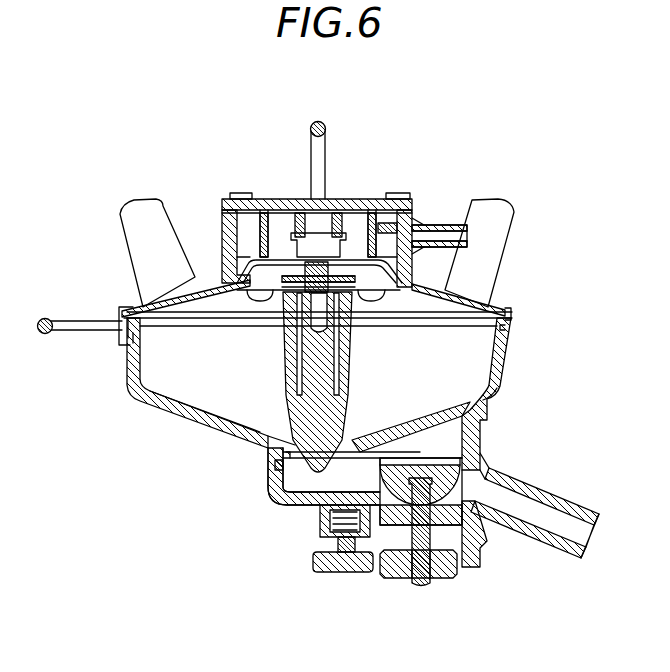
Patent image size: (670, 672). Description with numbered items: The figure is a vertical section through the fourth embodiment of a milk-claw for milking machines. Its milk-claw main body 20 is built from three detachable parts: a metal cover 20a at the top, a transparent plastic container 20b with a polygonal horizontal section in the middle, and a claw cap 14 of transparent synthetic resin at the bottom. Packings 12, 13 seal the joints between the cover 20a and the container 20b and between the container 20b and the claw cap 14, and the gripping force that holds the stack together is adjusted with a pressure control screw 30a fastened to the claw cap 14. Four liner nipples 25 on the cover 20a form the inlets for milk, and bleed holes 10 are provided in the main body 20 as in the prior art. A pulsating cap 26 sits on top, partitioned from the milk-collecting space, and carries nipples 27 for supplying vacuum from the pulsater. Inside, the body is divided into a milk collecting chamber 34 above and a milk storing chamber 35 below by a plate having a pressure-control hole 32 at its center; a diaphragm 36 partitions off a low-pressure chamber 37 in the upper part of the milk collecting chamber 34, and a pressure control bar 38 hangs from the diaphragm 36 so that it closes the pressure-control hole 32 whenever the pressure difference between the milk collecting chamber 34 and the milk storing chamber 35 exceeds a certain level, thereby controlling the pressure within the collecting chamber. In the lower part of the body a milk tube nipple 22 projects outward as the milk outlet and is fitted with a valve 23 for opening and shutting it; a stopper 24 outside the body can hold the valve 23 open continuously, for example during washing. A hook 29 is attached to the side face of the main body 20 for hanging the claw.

The bleed holes 10 is at (170, 300).
The packing 12 is at (128, 340).
The packing 13 is at (276, 466).
The claw cap 14 is at (288, 506).
The milk-claw main body 20 is at (523, 357).
The cover 20a is at (515, 308).
The container 20b is at (505, 392).
The milk tube nipple 22 is at (530, 485).
The valve 23 is at (428, 475).
The stopper 24 is at (446, 580).
The liner nipples 25 is at (138, 255).
The pulsating cap 26 is at (345, 199).
The nipples for supplying vacuum 27 is at (420, 226).
The hook 29 is at (47, 336).
The pressure control screw 30a is at (348, 575).
The pressure-control hole 32 is at (338, 446).
The milk collecting chamber 34 is at (253, 380).
The milk storing chamber 35 is at (366, 490).
The diaphragm 36 is at (396, 305).
The low-pressure chamber 37 is at (414, 268).
The pressure control bar 38 is at (285, 393).